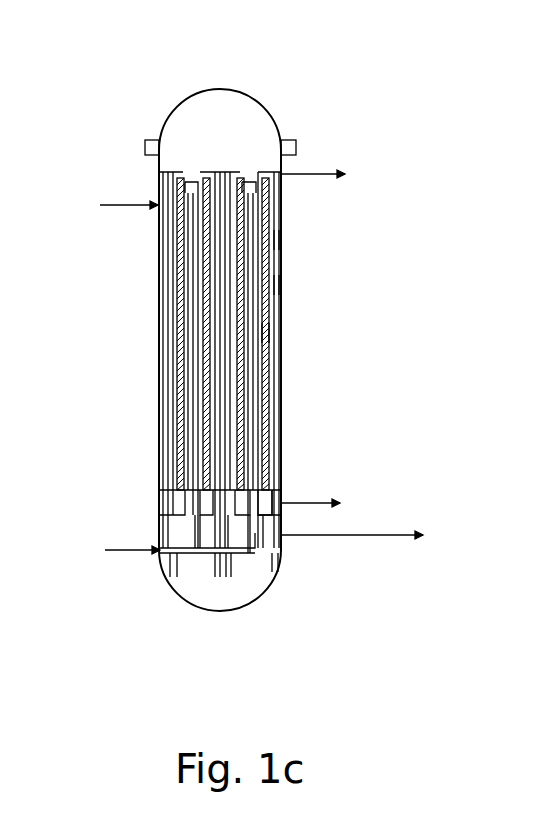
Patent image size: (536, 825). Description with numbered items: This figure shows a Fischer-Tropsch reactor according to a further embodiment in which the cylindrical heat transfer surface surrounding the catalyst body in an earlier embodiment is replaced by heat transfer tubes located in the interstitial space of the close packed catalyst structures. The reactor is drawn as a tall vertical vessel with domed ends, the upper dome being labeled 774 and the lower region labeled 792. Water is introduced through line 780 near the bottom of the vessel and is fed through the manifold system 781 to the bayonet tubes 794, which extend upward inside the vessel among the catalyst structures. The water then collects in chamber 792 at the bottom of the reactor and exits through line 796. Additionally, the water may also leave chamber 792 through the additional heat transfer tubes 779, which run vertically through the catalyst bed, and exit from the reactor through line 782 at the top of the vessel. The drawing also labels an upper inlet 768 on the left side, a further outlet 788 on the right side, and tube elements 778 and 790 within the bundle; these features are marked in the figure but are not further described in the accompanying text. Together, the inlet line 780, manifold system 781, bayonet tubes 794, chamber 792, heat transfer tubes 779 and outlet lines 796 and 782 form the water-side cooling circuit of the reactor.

The upper dome of reactor vessel 774 is at (178, 103).
The feed inlet 768 is at (125, 204).
The line 782 is at (313, 173).
The outer tube 778 is at (279, 240).
The additional heat transfer tubes 779 is at (279, 285).
The catalyst bed 790 is at (272, 333).
The bayonet tubes 794 is at (283, 498).
The side outlet 788 is at (320, 501).
The line 796 is at (393, 533).
The line 780 is at (127, 548).
The chamber 792 is at (218, 590).
The manifold system 781 is at (257, 537).